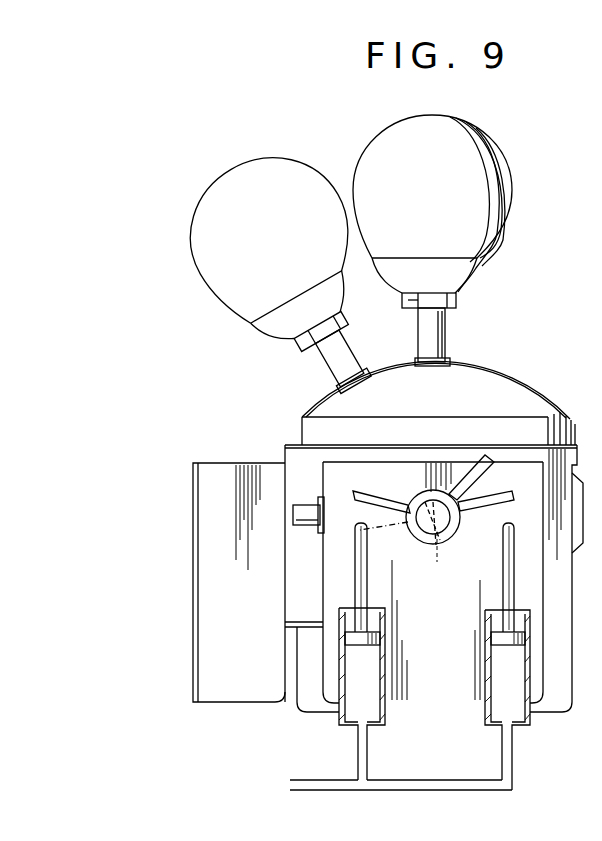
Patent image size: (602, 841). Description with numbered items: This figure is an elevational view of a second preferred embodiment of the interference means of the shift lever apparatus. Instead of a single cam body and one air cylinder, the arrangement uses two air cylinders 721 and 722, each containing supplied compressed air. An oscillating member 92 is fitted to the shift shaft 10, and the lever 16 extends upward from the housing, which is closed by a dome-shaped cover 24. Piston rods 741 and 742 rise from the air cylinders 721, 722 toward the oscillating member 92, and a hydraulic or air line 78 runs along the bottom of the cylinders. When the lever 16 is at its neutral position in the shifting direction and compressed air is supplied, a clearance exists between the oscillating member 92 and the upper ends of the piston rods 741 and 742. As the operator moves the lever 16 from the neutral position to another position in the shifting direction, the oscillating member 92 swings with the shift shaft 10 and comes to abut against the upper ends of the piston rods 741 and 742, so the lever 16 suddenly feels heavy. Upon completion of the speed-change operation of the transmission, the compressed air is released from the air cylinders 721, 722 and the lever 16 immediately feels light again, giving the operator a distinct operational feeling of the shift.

The shift shaft 10 is at (423, 505).
The lever 16 is at (443, 336).
The dome cover 24 is at (500, 379).
The oscillating member 92 is at (470, 515).
The piston rod 741 is at (368, 570).
The piston rod 742 is at (504, 590).
The air cylinder 721 is at (382, 731).
The air cylinder 722 is at (526, 731).
The hydraulic line 78 is at (302, 779).